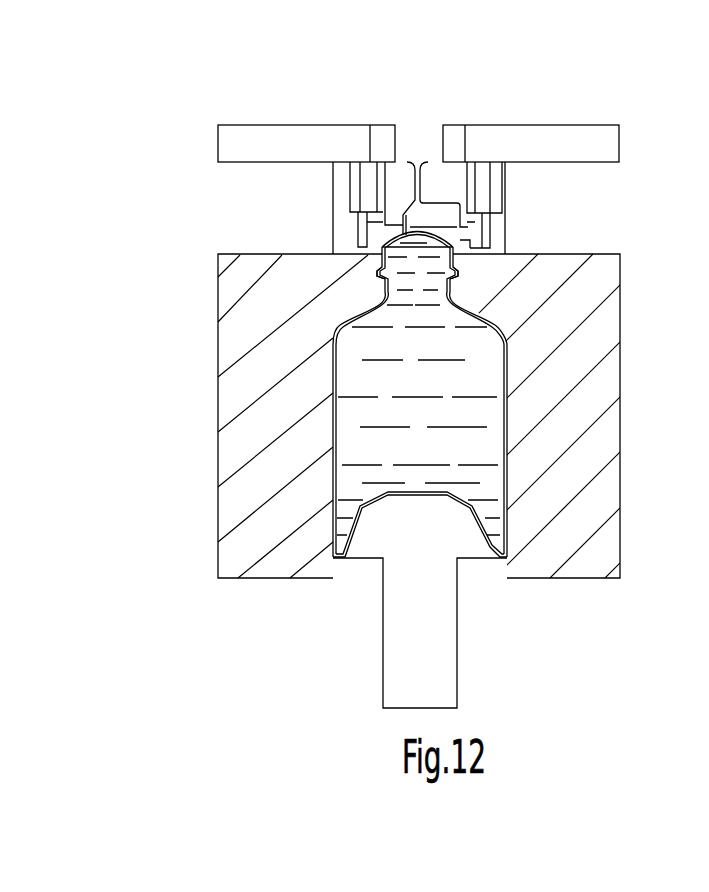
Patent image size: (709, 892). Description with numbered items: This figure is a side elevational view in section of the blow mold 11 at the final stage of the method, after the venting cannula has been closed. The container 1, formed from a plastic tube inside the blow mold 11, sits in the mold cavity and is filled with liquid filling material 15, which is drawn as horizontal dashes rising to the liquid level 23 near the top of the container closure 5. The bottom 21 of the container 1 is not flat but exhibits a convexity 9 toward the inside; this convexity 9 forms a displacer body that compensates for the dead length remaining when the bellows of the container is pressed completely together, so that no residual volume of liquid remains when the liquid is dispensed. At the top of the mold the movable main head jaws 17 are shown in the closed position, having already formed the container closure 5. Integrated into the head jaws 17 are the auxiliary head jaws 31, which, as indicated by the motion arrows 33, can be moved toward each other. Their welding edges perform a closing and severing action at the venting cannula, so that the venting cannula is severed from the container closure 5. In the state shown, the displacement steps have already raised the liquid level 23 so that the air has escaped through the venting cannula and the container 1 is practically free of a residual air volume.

The container 1 is at (333, 376).
The container closure 5 is at (458, 276).
The convexity 9 is at (380, 502).
The blow mold 11 is at (122, 389).
The liquid filling material 15 is at (362, 442).
The main head jaws 17 is at (436, 175).
The bottom 21 is at (499, 547).
The liquid level 23 is at (378, 273).
The auxiliary head jaws 31 is at (380, 235).
The motion arrows 33 is at (365, 197).